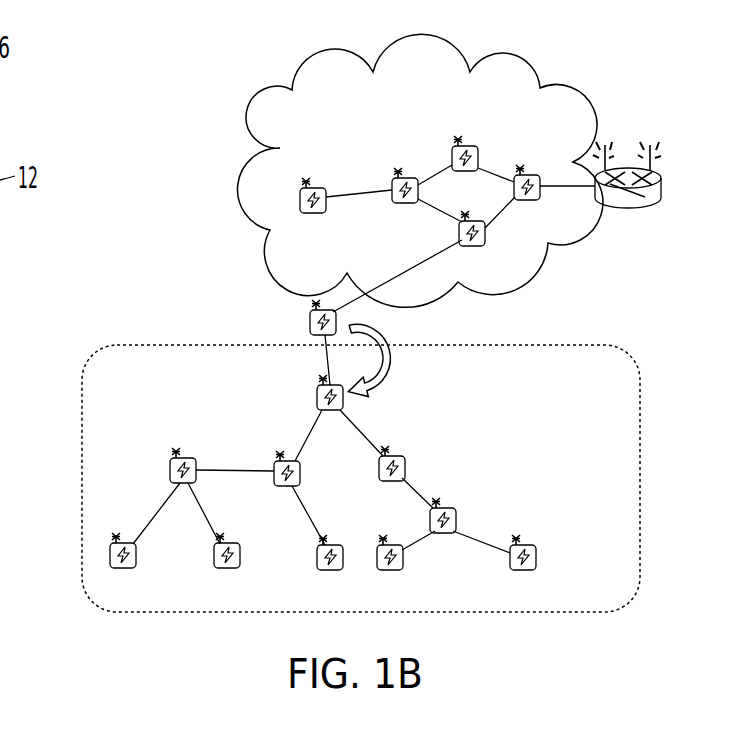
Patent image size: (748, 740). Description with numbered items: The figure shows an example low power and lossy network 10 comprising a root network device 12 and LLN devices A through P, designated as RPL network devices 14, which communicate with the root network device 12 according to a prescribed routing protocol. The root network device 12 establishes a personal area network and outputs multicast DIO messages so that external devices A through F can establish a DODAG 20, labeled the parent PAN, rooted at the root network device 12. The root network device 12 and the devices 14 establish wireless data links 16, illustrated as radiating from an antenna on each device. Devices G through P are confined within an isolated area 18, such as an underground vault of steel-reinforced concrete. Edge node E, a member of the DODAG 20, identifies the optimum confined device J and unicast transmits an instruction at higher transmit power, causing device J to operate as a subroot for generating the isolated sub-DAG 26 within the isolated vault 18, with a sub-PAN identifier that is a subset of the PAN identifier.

The low power and lossy network 10 is at (218, 172).
The root network device 12 is at (663, 192).
The LLN device 14 is at (322, 212).
The wireless data link 16 is at (657, 120).
The isolated area 18 is at (80, 478).
The DODAG 20 is at (523, 118).
The sub-DAG 26 is at (283, 437).